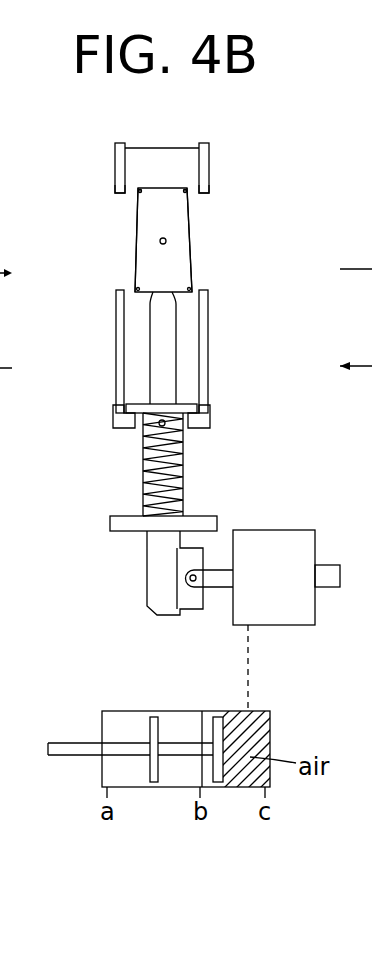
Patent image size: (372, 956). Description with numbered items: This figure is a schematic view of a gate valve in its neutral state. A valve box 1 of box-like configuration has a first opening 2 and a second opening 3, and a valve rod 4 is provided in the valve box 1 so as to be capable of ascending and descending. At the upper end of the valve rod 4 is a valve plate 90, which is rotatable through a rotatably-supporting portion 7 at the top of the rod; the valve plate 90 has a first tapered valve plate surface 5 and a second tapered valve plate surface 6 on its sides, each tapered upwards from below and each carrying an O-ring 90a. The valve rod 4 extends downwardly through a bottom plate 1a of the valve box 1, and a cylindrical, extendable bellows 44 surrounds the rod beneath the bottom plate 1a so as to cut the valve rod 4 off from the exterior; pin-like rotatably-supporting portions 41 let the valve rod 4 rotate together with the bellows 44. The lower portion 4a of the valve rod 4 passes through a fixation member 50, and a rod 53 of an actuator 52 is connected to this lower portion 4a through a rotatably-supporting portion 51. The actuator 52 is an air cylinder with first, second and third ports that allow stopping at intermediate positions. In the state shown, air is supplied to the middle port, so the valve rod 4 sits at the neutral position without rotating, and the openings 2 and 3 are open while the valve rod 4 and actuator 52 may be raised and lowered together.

The valve box 1 is at (208, 148).
The bottom plate 1a is at (185, 404).
The first opening 2 is at (118, 194).
The second opening 3 is at (208, 195).
The valve rod 4 is at (163, 348).
The lower portion of the valve rod 4a is at (157, 581).
The first tapered valve plate surface 5 is at (137, 252).
The second tapered valve plate surface 6 is at (191, 240).
The rotatably-supporting portion 7 is at (167, 244).
The rotatably-supporting portion 41 is at (165, 426).
The bellows 44 is at (143, 470).
The fixation member 50 is at (118, 522).
The rotatably-supporting portion 51 is at (192, 582).
The actuator 52 is at (278, 617).
The rod 53 is at (220, 588).
The valve plate 90 is at (150, 267).
The O-ring 90a is at (138, 190).